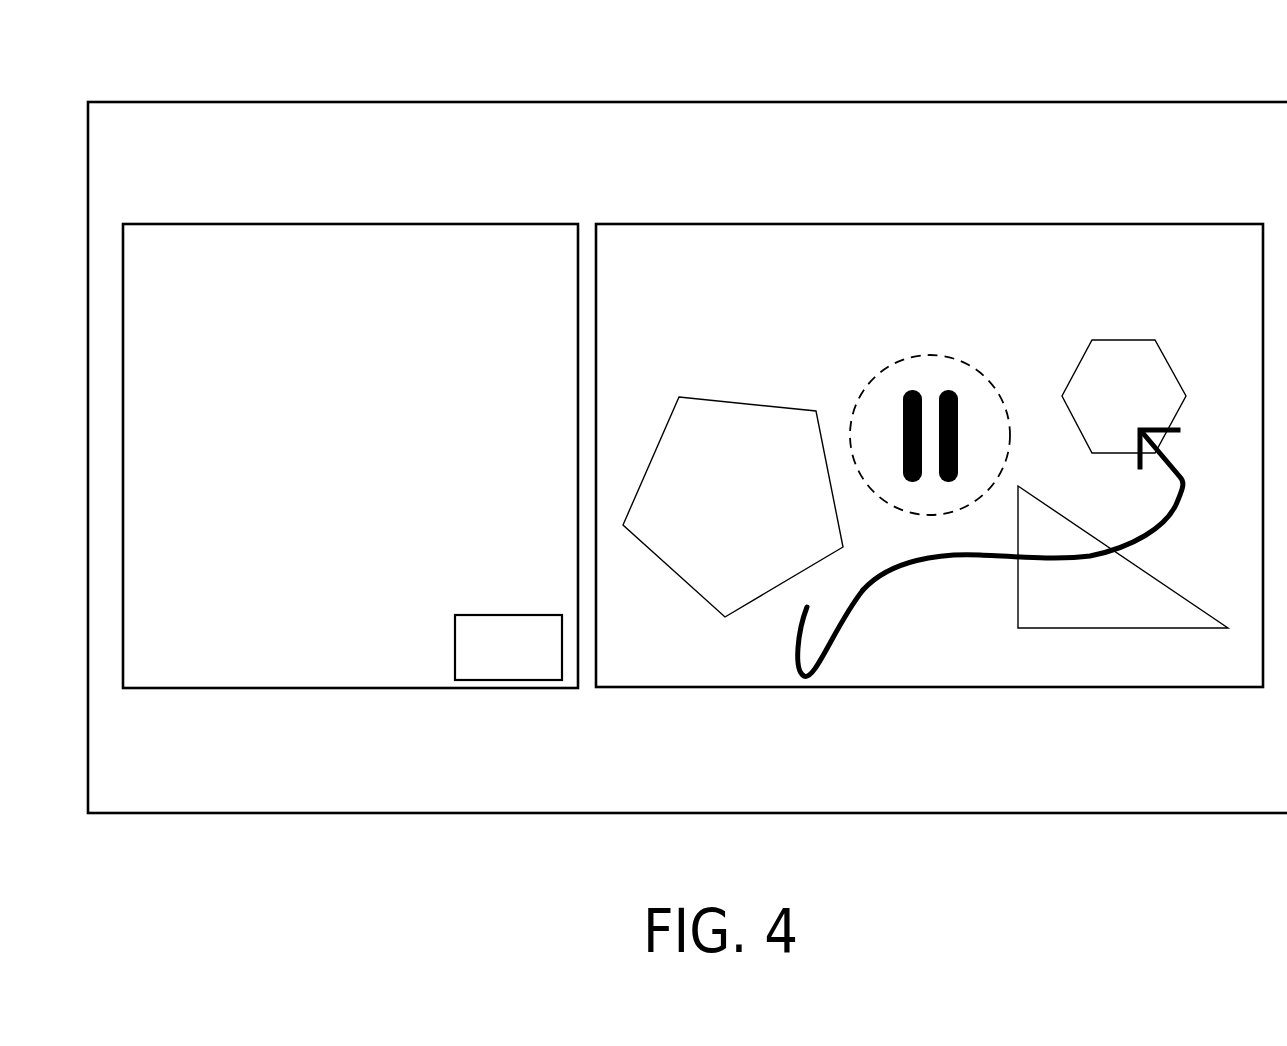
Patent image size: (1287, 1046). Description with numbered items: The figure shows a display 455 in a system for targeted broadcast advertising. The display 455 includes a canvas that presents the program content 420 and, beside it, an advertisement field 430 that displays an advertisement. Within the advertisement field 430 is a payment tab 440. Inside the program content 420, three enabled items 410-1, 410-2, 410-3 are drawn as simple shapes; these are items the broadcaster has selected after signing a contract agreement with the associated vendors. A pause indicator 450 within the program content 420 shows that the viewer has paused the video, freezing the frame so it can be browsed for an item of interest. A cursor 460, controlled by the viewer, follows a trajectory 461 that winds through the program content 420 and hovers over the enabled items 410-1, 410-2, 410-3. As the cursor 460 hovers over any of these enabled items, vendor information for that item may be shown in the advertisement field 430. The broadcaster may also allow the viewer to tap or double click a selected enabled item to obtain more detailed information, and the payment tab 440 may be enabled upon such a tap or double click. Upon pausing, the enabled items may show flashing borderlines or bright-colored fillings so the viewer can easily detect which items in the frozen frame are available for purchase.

The display 455 is at (243, 90).
The advertisement field 430 is at (219, 287).
The payment tab 440 is at (538, 658).
The program content 420 is at (964, 657).
The enabled item 410-1 is at (784, 517).
The enabled item 410-2 is at (1169, 410).
The enabled item 410-3 is at (1129, 608).
The pause indicator 450 is at (879, 372).
The cursor 460 is at (1168, 448).
The trajectory 461 is at (794, 621).